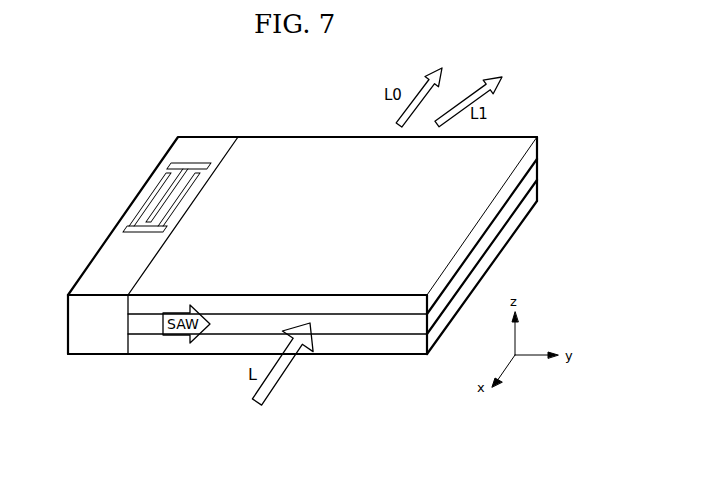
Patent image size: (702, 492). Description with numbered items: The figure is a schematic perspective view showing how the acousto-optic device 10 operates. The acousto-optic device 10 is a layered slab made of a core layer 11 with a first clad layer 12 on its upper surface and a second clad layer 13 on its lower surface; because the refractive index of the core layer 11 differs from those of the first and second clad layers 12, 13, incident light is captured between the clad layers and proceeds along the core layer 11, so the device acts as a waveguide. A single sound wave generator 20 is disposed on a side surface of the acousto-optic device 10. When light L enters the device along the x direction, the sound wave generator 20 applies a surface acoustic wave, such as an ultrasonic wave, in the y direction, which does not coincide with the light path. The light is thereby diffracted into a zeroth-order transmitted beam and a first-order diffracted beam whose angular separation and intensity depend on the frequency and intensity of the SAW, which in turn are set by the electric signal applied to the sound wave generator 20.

The acousto-optic device 10 is at (334, 269).
The core layer 11 is at (540, 170).
The first clad layer 12 is at (540, 147).
The second clad layer 13 is at (540, 194).
The sound wave generator 20 is at (97, 263).